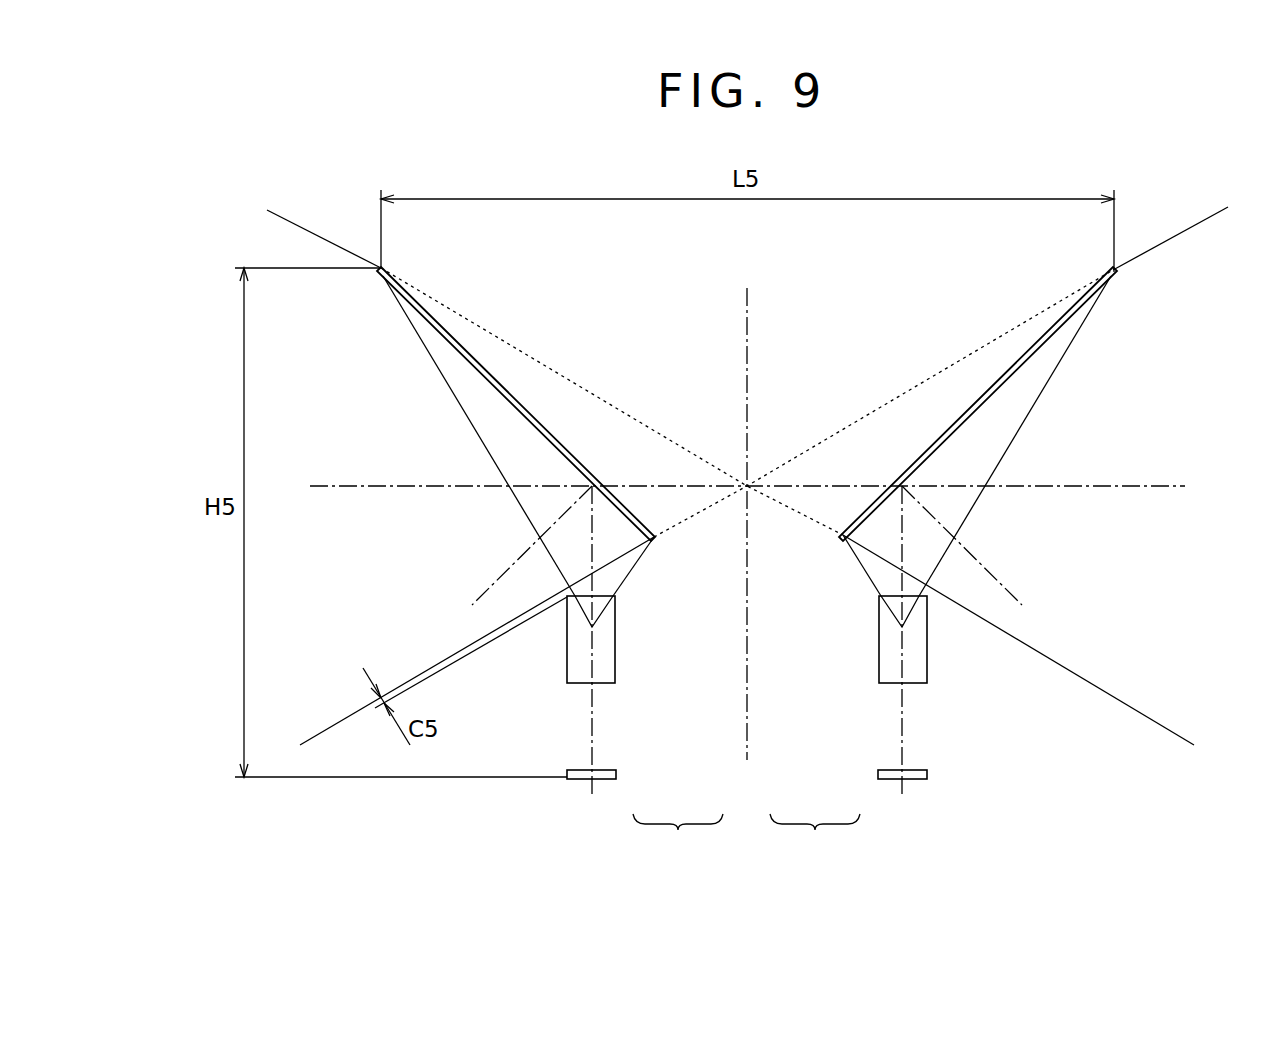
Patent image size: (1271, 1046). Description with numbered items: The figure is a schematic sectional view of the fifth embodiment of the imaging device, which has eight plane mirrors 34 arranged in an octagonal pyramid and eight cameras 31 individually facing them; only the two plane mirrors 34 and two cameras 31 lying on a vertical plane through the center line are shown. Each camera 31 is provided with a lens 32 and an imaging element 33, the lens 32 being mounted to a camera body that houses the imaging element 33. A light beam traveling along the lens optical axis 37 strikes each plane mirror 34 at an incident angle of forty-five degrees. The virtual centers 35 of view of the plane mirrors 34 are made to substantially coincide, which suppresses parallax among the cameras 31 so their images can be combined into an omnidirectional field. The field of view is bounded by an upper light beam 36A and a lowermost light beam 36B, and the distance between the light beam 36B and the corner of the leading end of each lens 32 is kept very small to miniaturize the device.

The camera 31 is at (746, 837).
The lens 32 is at (600, 683).
The imaging element 33 is at (605, 770).
The plane mirror 34 is at (452, 322).
The virtual center of view 35 is at (749, 484).
The light beam 36A is at (293, 222).
The light beam passing through lowermost end of field of view 36B is at (332, 727).
The lens optical axis 37 is at (903, 551).